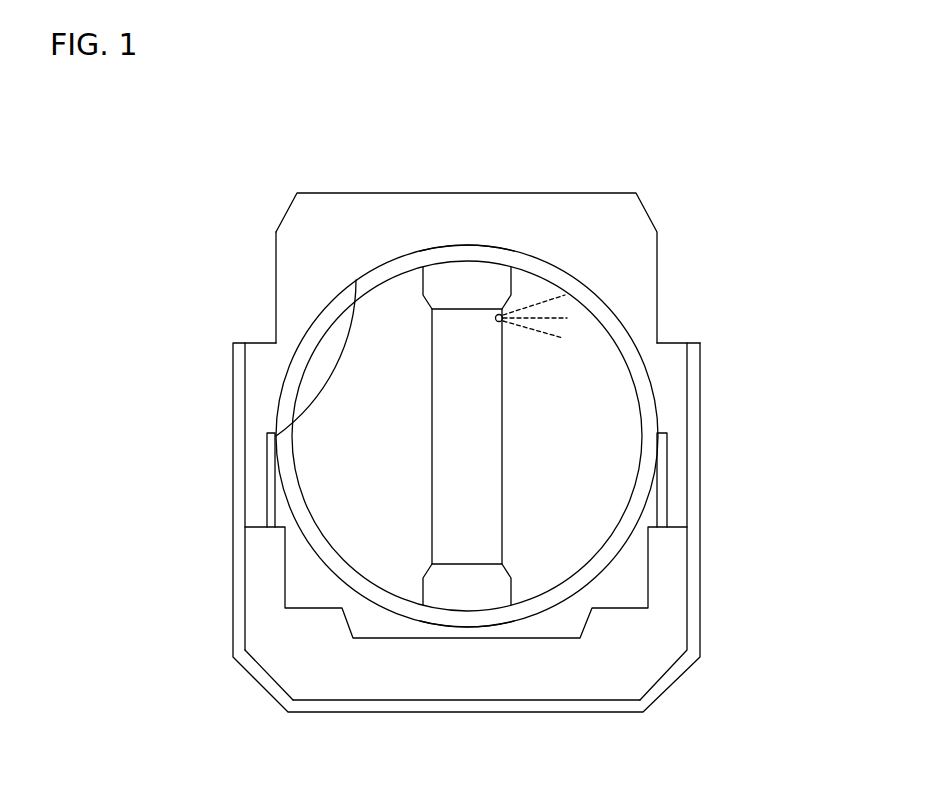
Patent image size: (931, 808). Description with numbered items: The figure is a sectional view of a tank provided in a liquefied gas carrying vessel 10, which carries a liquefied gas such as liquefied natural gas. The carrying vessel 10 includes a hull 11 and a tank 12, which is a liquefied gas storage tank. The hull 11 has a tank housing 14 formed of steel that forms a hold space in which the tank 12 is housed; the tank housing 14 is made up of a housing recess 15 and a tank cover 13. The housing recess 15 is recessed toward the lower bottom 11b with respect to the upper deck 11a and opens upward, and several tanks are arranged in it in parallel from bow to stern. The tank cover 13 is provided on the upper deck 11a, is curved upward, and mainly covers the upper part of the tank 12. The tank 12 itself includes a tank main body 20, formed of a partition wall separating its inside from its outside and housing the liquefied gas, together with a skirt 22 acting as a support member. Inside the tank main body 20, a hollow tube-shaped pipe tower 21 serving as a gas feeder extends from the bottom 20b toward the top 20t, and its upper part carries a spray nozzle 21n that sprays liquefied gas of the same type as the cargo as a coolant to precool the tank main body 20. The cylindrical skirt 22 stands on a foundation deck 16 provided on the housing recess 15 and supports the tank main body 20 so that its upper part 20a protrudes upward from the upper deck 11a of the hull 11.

The carrying vessel 10 is at (708, 180).
The hull 11 is at (700, 395).
The upper deck 11a is at (673, 341).
The lower bottom 11b is at (473, 698).
The tank 12 is at (603, 302).
The tank cover 13 is at (276, 260).
The tank housing 14 is at (172, 217).
The housing recess 15 is at (246, 368).
The foundation deck 16 is at (255, 527).
The tank main body 20 is at (485, 248).
The upper part 20a is at (356, 280).
The top 20t is at (465, 245).
The bottom 20b is at (455, 627).
The pipe tower 21 is at (502, 460).
The spray nozzle 21n is at (499, 322).
The skirt 22 is at (665, 485).